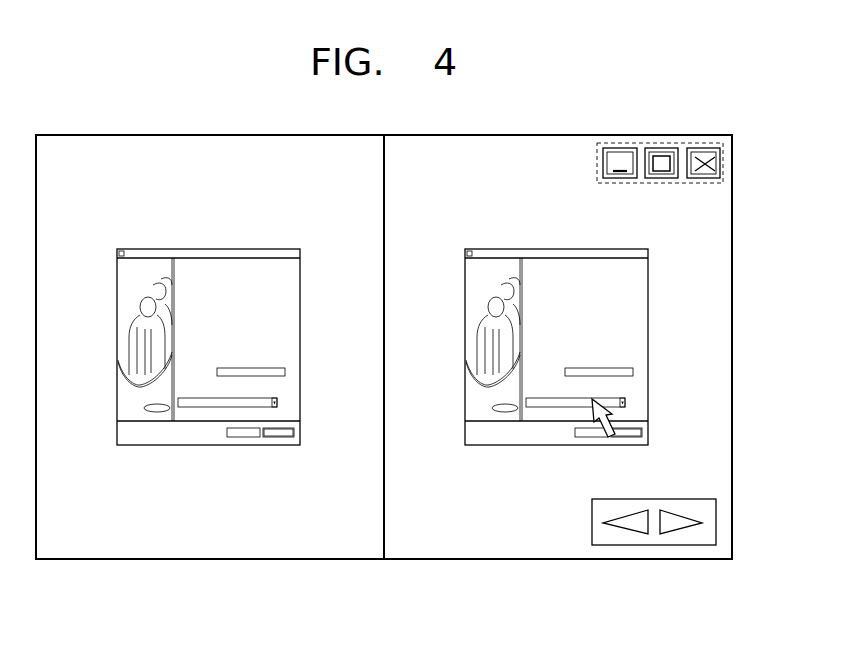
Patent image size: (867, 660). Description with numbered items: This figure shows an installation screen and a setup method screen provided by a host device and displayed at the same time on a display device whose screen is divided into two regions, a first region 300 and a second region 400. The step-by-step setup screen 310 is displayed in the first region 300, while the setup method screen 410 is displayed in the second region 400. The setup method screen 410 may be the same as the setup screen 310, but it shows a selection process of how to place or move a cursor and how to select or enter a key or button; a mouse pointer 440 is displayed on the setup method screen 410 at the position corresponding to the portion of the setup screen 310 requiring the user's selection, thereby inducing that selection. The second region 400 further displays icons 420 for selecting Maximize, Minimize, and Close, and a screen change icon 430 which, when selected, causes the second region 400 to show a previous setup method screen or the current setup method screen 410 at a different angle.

The first region 300 is at (112, 560).
The setup screen 310 is at (183, 446).
The second region 400 is at (430, 560).
The setup method screen 410 is at (509, 446).
The icons 420 is at (661, 143).
The screen change icon 430 is at (654, 546).
The mouse pointer 440 is at (608, 413).